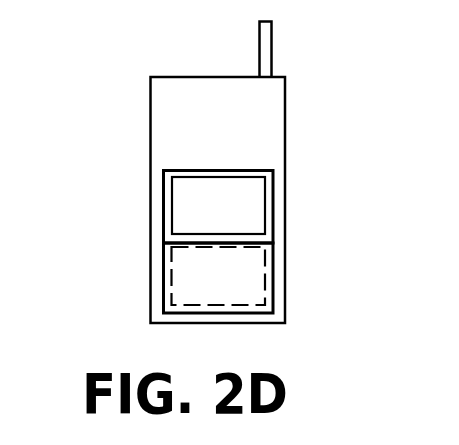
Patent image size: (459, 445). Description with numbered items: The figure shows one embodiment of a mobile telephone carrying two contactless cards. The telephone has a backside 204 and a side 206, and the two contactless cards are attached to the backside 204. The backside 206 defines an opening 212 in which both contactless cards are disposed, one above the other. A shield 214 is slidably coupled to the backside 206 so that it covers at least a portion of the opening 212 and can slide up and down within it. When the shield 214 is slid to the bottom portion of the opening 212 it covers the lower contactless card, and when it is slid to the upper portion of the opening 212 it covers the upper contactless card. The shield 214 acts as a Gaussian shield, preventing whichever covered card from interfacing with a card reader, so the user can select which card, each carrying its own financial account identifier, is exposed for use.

The backside 204 is at (202, 110).
The side 206 is at (150, 256).
The opening 212 is at (273, 173).
The shield 214 is at (273, 245).